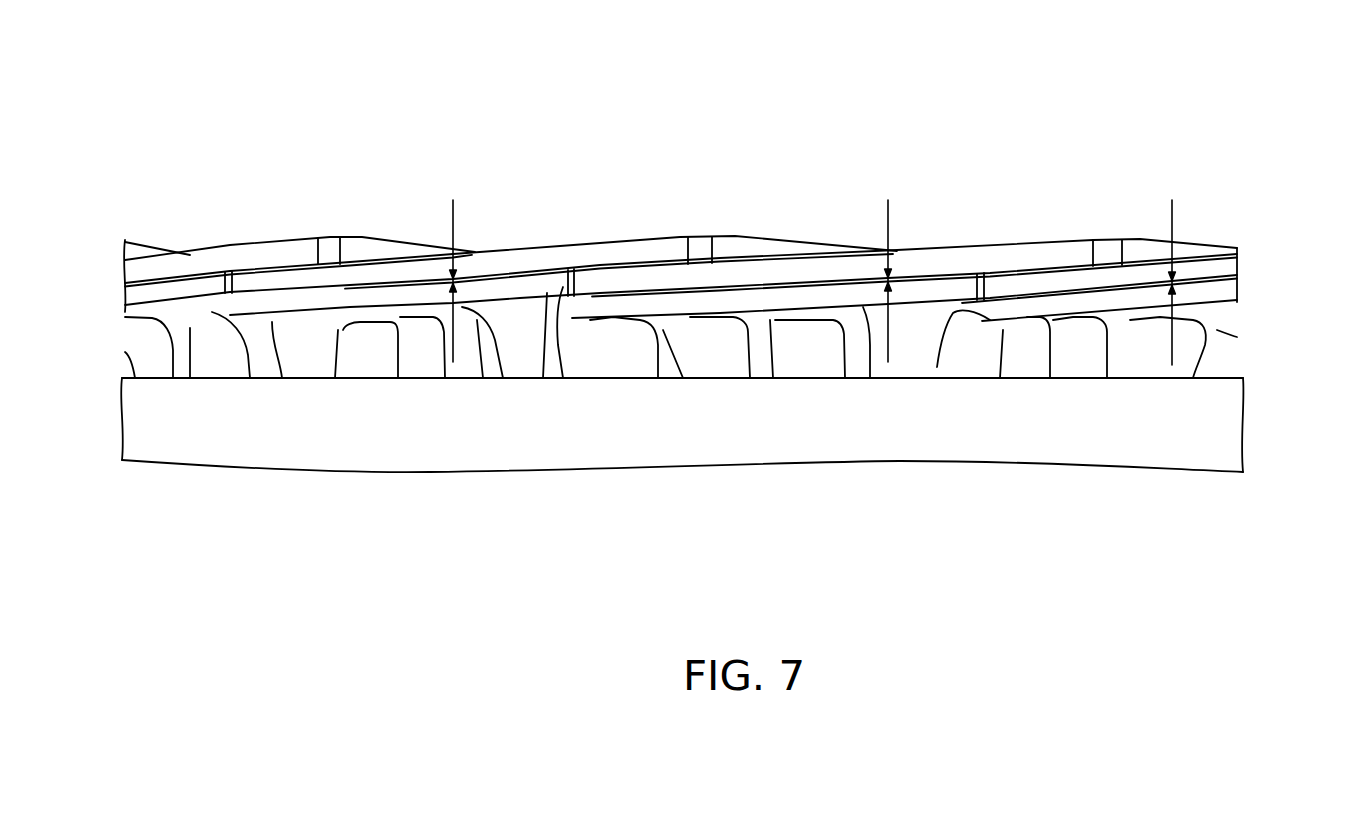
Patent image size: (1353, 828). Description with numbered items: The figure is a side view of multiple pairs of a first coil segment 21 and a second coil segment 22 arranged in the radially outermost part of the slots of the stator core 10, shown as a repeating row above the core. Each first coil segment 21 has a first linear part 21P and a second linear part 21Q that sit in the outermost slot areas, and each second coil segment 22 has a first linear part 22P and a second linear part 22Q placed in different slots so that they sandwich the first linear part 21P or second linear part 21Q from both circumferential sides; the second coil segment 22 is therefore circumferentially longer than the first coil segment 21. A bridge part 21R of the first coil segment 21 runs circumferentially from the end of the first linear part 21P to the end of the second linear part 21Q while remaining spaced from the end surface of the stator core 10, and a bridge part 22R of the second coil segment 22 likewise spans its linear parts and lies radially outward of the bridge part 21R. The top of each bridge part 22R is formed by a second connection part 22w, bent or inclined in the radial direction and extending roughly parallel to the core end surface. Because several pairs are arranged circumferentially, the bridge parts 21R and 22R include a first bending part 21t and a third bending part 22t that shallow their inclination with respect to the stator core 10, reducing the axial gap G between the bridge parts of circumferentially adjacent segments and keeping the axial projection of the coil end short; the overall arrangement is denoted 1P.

The pressure sensor panel 1P is at (212, 126).
The stator core 10 is at (212, 441).
The first coil segment 21 is at (293, 318).
The second coil segment 22 is at (250, 288).
The first linear part 21P is at (408, 368).
The second linear part 21Q is at (334, 368).
The first linear part 22P is at (497, 368).
The second linear part 22Q is at (264, 368).
The bridge part 21R is at (406, 266).
The bridge part 22R is at (1205, 250).
The first bending part 21t is at (548, 320).
The third bending part 22t is at (980, 286).
The second connection part 22w is at (330, 254).
The gap G is at (813, 278).